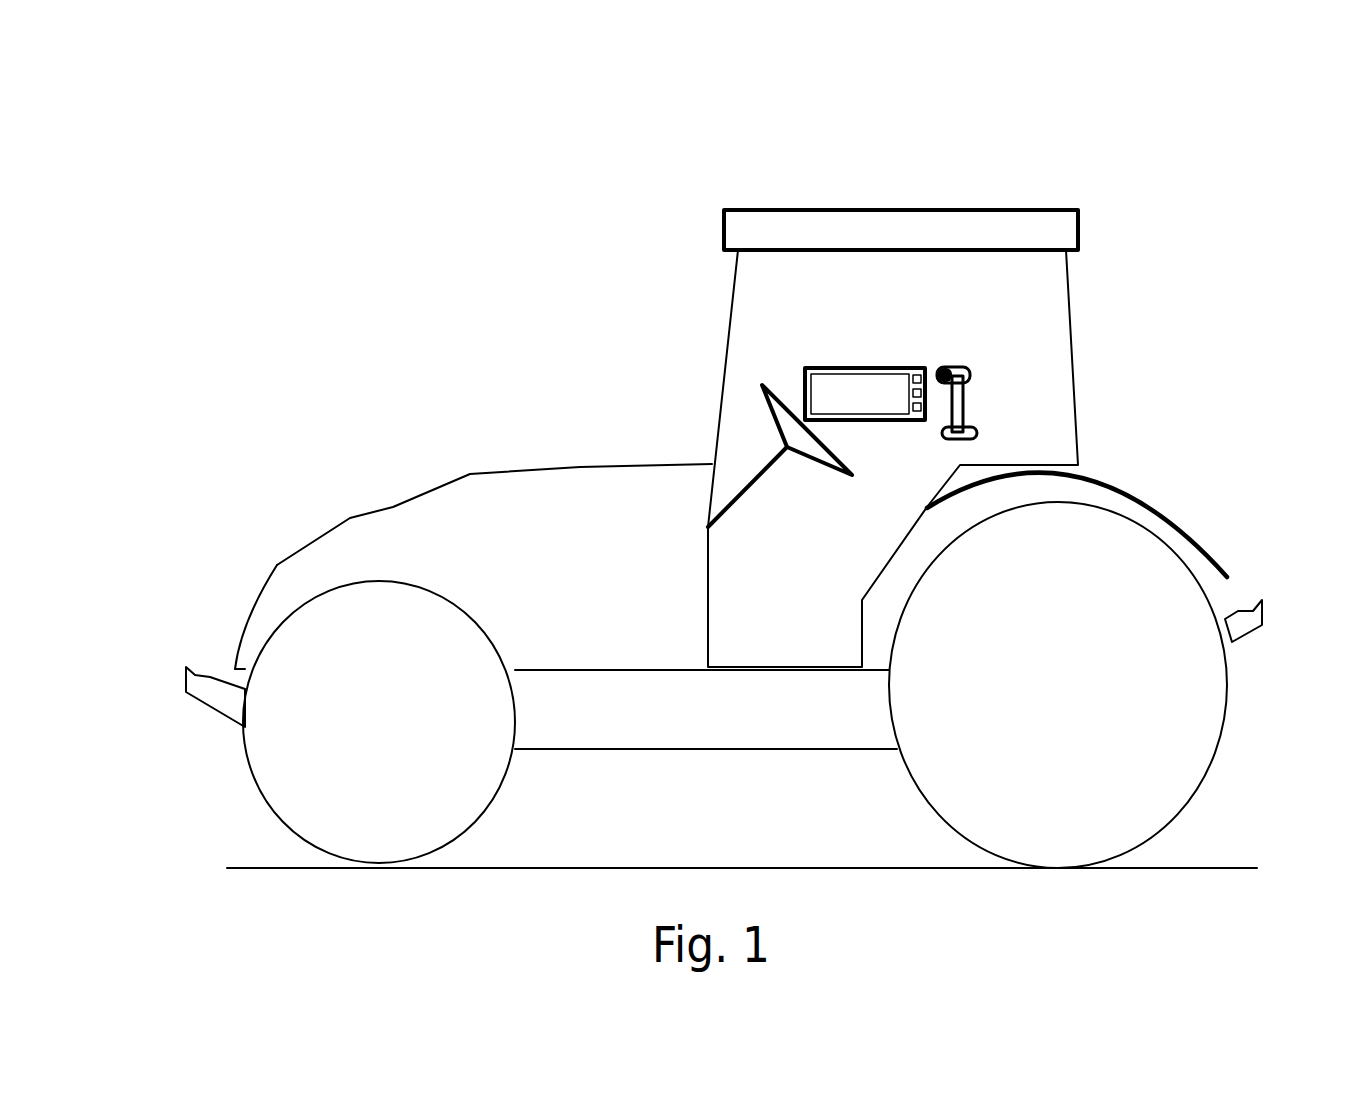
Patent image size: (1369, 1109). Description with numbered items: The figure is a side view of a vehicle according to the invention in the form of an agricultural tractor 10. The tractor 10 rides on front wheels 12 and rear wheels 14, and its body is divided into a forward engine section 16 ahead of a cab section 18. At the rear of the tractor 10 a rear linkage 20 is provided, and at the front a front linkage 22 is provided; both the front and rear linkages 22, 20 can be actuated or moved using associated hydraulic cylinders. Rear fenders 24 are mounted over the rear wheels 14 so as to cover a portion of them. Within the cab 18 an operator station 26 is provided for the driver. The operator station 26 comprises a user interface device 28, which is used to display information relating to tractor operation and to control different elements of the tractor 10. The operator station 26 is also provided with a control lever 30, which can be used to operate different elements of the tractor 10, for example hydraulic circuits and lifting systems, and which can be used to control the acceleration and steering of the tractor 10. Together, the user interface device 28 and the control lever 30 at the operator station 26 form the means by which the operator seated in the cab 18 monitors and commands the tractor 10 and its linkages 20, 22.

The tractor 10 is at (288, 197).
The front wheels 12 is at (370, 843).
The rear wheels 14 is at (1097, 820).
The forward engine section 16 is at (400, 513).
The cab section 18 is at (1020, 325).
The rear linkage 20 is at (1245, 622).
The front linkage 22 is at (216, 697).
The rear fenders 24 is at (1150, 500).
The operator station 26 is at (690, 352).
The user interface device 28 is at (807, 372).
The control lever 30 is at (967, 410).